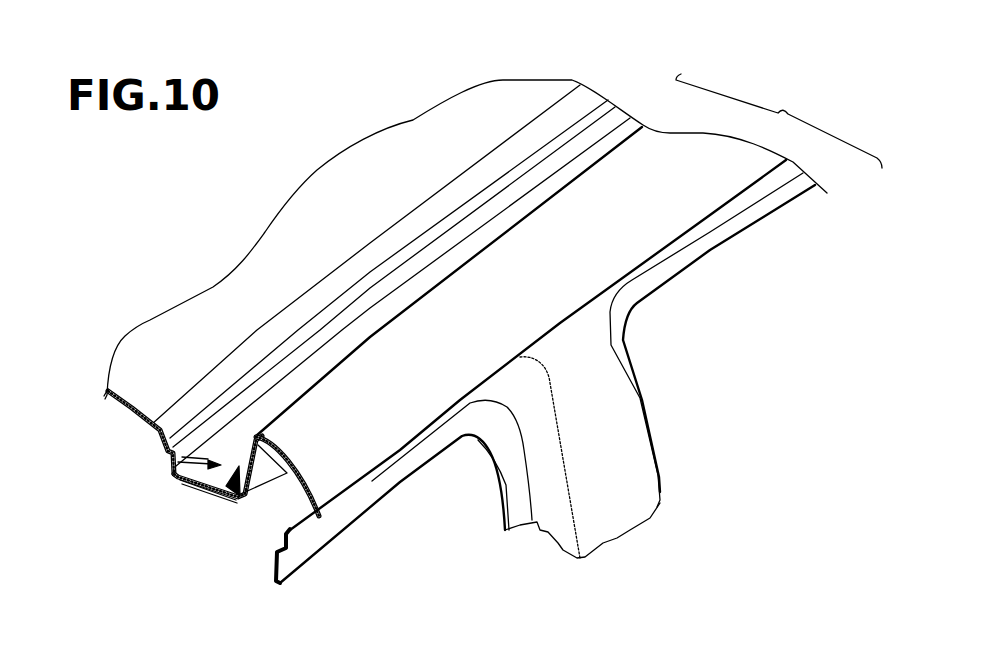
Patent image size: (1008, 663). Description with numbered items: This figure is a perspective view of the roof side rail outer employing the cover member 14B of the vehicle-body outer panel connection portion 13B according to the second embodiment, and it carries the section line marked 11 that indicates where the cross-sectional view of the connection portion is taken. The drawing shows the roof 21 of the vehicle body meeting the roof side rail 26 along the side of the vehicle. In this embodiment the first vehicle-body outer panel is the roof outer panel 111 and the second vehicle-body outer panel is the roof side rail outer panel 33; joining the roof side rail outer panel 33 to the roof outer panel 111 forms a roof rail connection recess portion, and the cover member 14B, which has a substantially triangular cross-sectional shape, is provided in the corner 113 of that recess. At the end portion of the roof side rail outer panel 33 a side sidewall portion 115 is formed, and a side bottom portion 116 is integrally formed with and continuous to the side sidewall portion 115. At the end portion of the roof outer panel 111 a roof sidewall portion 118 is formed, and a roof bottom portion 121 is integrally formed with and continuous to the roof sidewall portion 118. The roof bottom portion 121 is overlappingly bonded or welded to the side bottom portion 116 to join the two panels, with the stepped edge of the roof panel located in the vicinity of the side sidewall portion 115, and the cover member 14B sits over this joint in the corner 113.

The roof 21 is at (337, 147).
The roof outer panel 111 is at (420, 152).
The roof sidewall portion 118 is at (205, 414).
The roof bottom portion 121 is at (234, 447).
The cover member 14B is at (167, 462).
The vehicle-body outer panel connection portion 13B is at (168, 491).
The side bottom portion 116 is at (200, 487).
The corner 113 is at (230, 497).
The side sidewall portion 115 is at (265, 487).
The roof side rail outer panel 33 is at (630, 222).
The roof side rail 26 is at (779, 121).
The section line 11- 11 is at (393, 406).